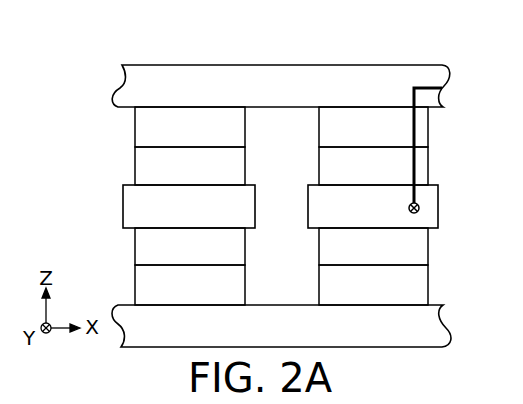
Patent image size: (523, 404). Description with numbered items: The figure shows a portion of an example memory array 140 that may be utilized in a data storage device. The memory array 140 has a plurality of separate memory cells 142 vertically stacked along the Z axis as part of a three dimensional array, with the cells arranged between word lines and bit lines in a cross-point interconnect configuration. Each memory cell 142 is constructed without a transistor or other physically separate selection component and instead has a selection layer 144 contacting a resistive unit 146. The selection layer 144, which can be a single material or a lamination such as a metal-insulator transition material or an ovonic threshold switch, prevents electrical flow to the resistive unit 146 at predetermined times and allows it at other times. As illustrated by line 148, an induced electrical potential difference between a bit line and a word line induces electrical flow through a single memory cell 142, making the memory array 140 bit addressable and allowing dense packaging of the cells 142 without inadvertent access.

The memory array 140 is at (264, 184).
The memory cell 142 is at (277, 206).
The selection layer 144 is at (172, 138).
The resistive unit 146 is at (172, 176).
The line 148 is at (416, 160).